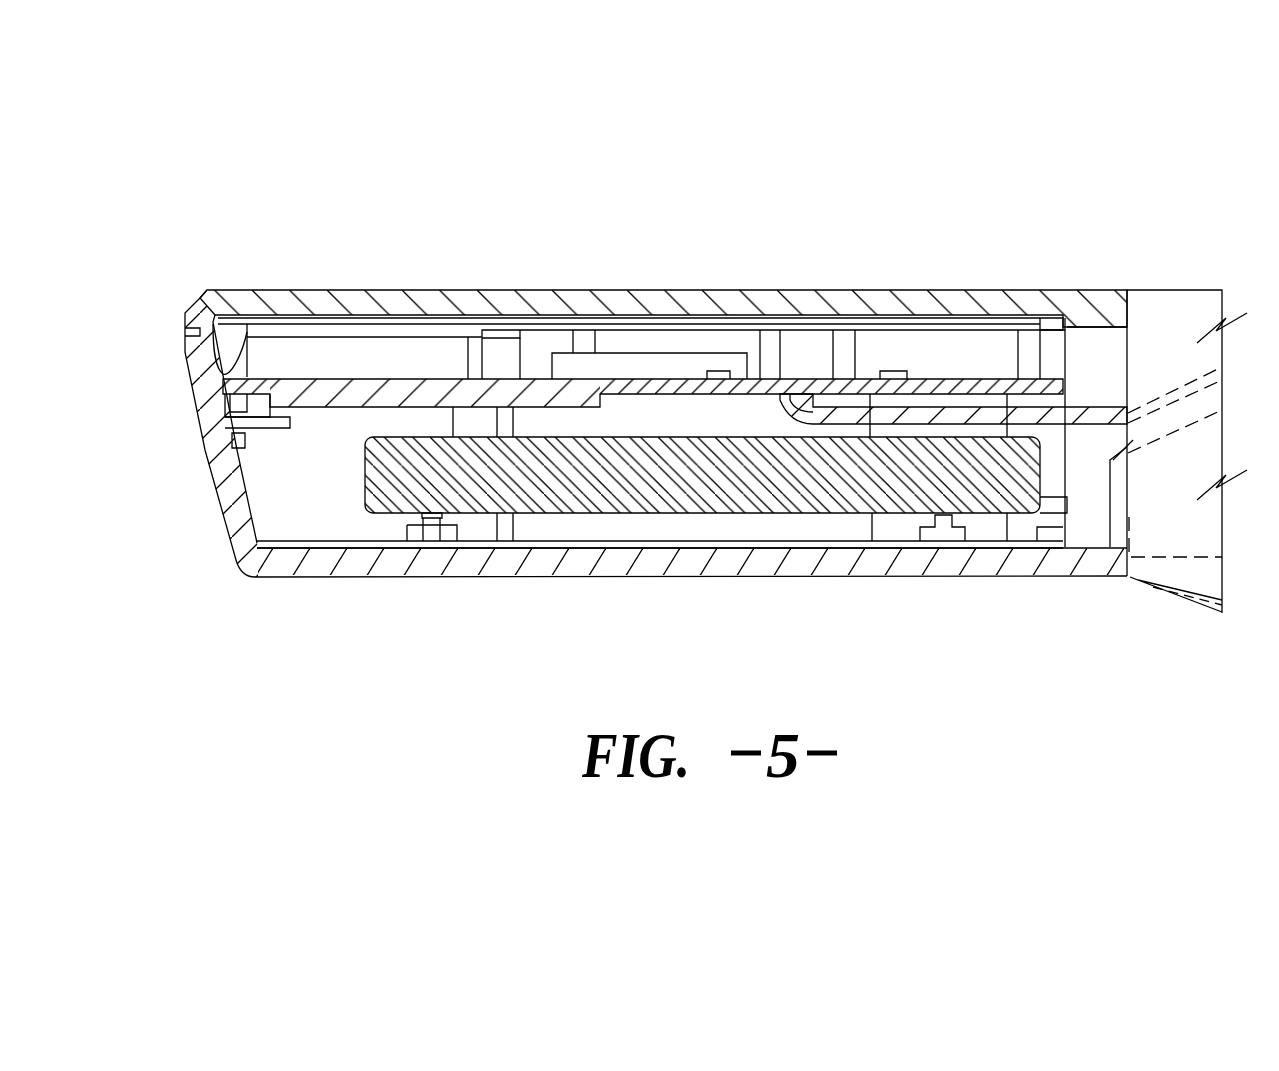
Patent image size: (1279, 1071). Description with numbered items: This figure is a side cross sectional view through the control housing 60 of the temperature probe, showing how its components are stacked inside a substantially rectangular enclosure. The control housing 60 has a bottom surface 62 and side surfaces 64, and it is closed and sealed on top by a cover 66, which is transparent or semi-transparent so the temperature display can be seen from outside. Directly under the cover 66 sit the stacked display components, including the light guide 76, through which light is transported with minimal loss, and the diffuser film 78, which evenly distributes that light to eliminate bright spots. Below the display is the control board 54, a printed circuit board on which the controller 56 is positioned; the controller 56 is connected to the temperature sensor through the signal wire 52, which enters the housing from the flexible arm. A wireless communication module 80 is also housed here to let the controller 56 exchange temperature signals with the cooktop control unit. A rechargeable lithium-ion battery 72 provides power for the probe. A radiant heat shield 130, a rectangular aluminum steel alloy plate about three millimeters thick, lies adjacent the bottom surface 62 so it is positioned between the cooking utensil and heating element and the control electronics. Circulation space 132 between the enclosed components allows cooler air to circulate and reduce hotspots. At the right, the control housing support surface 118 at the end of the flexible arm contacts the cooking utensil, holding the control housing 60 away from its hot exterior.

The control housing 60 is at (985, 148).
The cover 66 is at (830, 305).
The radiant heat shield 130 is at (365, 544).
The diffuser film 78 is at (917, 325).
The wireless communication module 80 is at (308, 390).
The light guide 76 is at (990, 347).
The controller 56 is at (667, 367).
The control board 54 is at (457, 392).
The side surfaces 64 is at (262, 493).
The battery 72 is at (573, 492).
The bottom surface 62 is at (667, 547).
The circulation space 132 is at (757, 413).
The signal wire 52 is at (1082, 415).
The control housing support surface 118 is at (1190, 602).